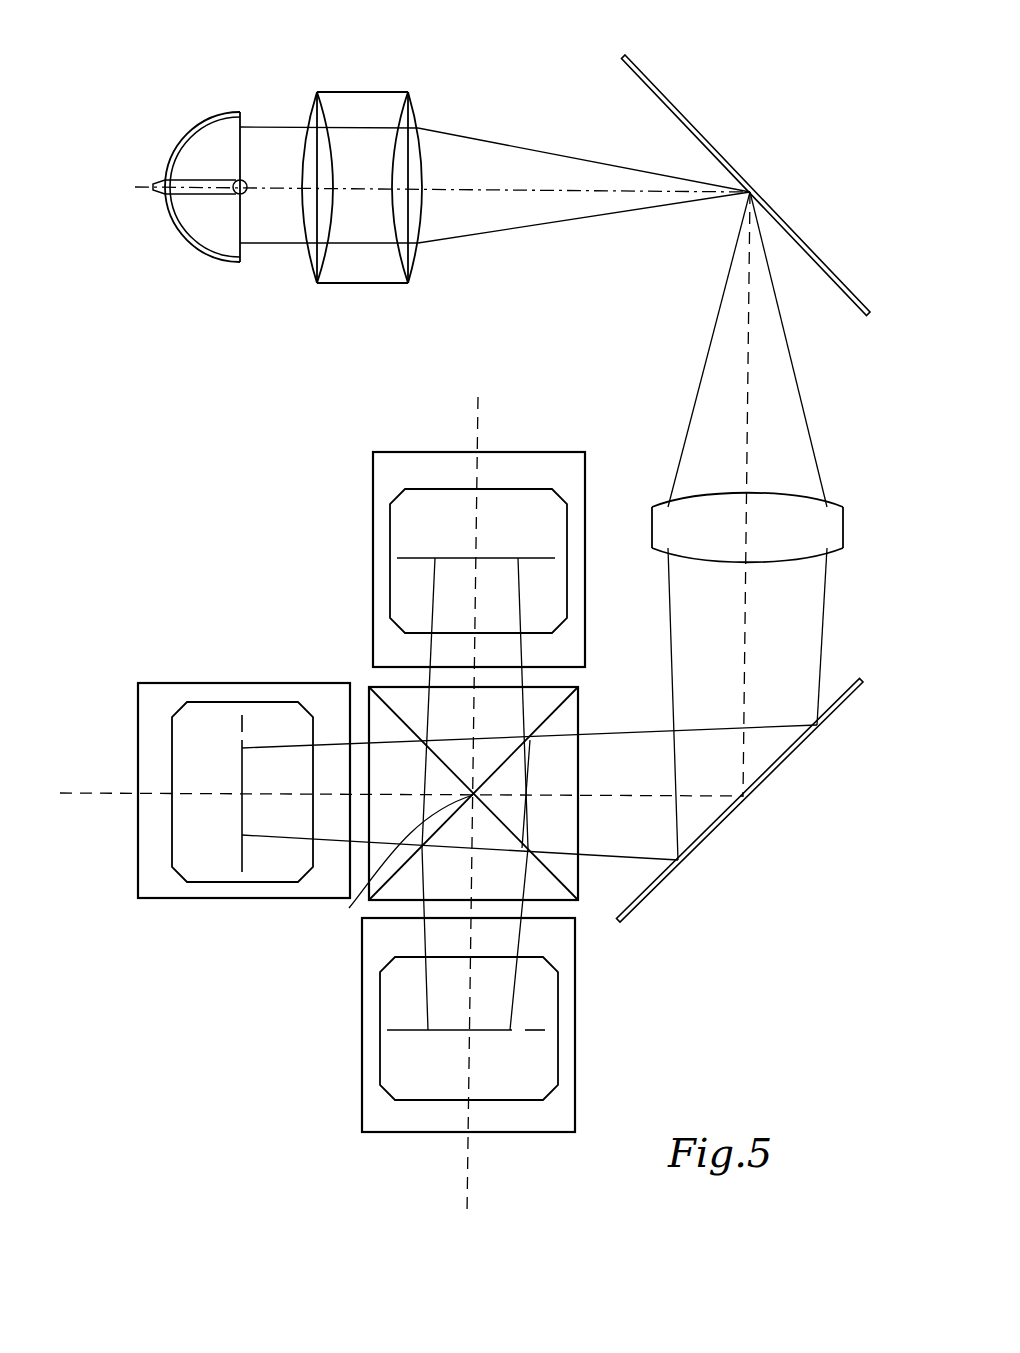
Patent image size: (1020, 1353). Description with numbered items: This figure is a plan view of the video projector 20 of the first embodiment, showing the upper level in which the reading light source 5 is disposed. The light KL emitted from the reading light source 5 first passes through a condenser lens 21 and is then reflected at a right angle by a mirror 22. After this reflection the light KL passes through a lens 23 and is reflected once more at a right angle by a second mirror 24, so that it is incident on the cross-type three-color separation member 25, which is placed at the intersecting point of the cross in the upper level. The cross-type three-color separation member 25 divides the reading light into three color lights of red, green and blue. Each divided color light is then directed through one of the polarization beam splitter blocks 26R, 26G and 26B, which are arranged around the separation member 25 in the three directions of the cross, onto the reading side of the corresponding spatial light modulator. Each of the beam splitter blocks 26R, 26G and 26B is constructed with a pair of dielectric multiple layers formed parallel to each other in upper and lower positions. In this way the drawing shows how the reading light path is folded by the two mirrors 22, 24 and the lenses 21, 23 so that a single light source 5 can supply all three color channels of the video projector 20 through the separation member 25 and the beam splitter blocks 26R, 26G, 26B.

The video projector 20 is at (180, 28).
The reading light source 5 is at (198, 118).
The condenser lens 21 is at (372, 92).
The mirror 22 is at (720, 146).
The lens 23 is at (836, 501).
The mirror 24 is at (815, 730).
The cross-type 3-color separation member 25 is at (582, 887).
The polarization beam splitter block 26B is at (373, 520).
The polarization beam splitter block 26G is at (192, 898).
The polarization beam splitter block 26R is at (437, 1132).
The light KL is at (522, 149).